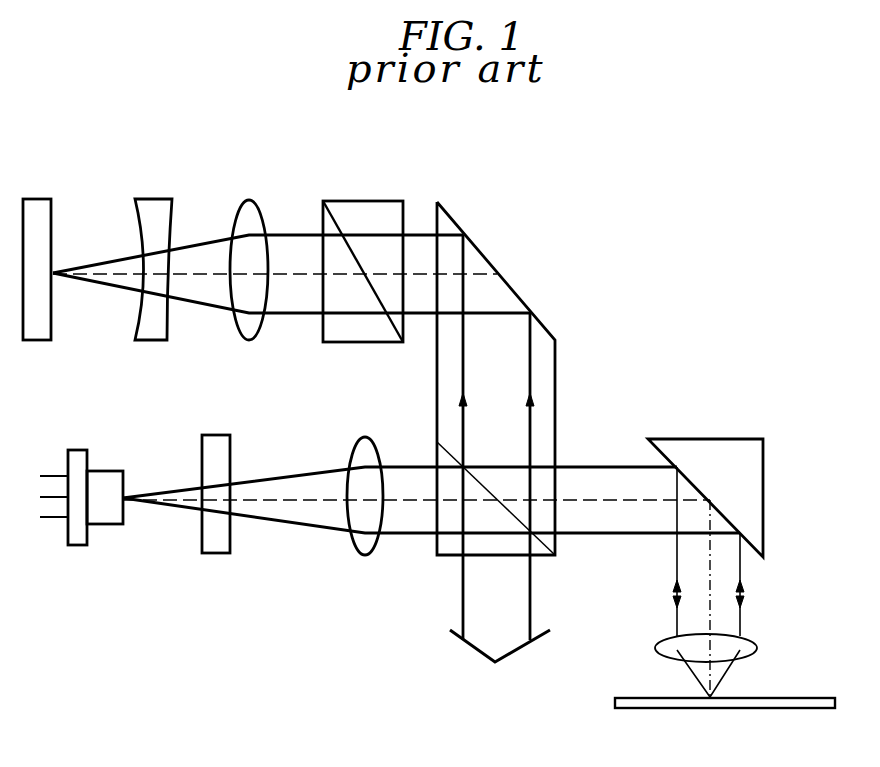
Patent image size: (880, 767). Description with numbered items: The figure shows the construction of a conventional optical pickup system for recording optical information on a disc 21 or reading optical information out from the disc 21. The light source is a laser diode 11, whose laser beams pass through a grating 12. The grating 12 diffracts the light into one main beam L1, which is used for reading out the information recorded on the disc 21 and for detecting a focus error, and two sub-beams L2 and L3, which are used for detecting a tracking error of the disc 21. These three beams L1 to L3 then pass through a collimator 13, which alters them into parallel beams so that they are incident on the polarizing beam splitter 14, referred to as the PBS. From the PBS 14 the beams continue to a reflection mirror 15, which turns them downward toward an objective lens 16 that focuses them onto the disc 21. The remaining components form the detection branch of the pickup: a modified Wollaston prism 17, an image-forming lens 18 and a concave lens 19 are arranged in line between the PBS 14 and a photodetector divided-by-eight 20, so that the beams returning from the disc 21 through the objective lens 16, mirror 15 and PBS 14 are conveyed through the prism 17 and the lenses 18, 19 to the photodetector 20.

The laser diode 11 is at (80, 535).
The grating 12 is at (213, 535).
The collimator 13 is at (364, 535).
The polarizing beam splitter 14 is at (484, 270).
The reflection mirror 15 is at (763, 471).
The objective lens 16 is at (752, 647).
The modified Wollaston prism 17 is at (367, 215).
The image-forming lens 18 is at (248, 215).
The concave lens 19 is at (157, 212).
The photodetector divided-by-eight 20 is at (36, 212).
The disc 21 is at (819, 706).
The main beam L1 is at (280, 490).
The sub-beam L2 is at (312, 468).
The sub-beam L3 is at (280, 525).